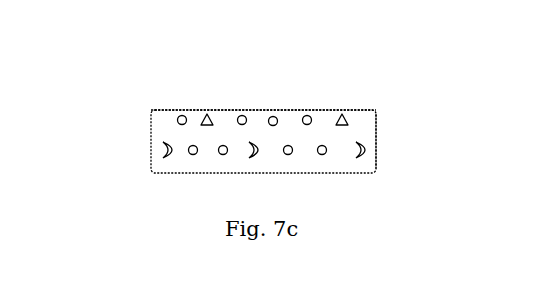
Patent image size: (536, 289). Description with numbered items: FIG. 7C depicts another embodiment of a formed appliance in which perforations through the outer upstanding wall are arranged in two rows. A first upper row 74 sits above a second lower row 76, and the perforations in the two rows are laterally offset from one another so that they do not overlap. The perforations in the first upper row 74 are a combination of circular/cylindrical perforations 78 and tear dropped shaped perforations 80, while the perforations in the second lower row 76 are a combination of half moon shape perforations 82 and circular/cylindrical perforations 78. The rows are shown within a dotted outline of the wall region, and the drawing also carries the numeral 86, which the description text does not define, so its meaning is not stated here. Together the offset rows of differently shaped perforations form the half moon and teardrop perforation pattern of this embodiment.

The first upper row 74 is at (359, 122).
The second lower row 76 is at (375, 160).
The circular/cylindrical perforations 78 is at (184, 115).
The tear dropped shaped perforations 80 is at (274, 117).
The half moon shape perforations 82 is at (260, 163).
The insert plate 86 is at (150, 135).